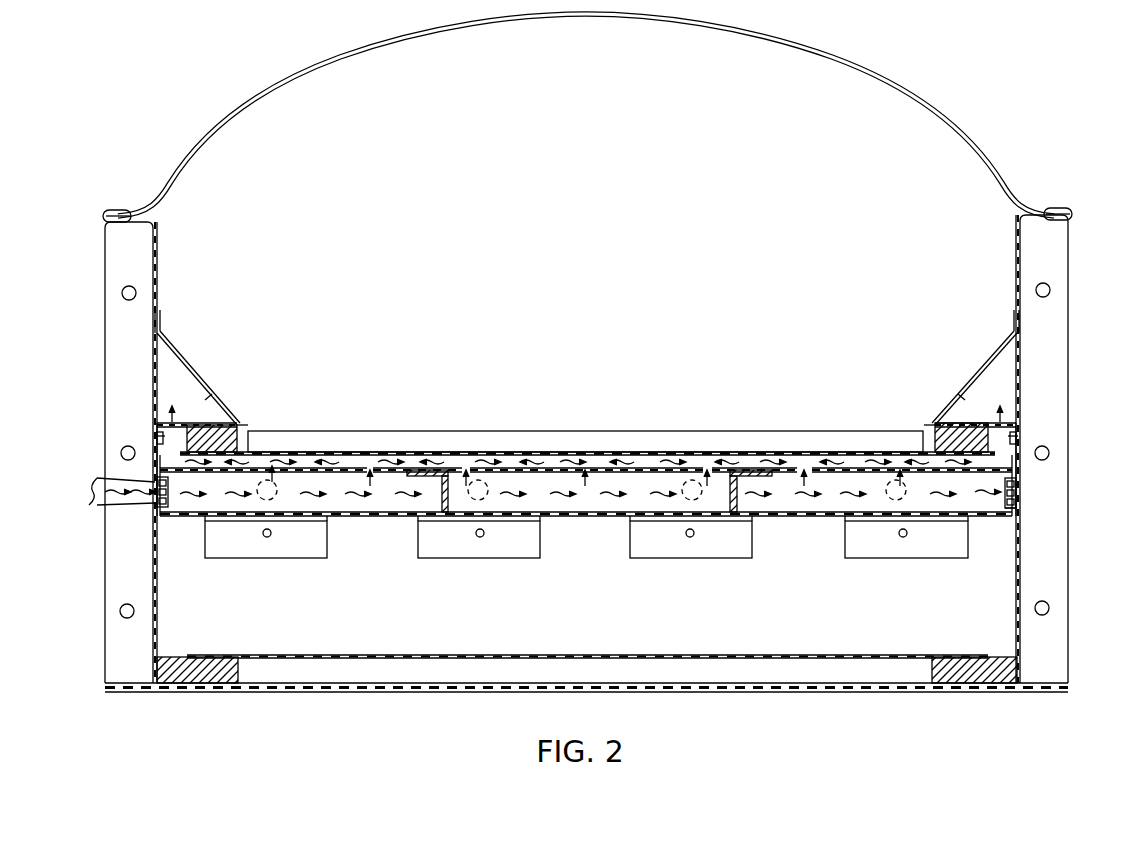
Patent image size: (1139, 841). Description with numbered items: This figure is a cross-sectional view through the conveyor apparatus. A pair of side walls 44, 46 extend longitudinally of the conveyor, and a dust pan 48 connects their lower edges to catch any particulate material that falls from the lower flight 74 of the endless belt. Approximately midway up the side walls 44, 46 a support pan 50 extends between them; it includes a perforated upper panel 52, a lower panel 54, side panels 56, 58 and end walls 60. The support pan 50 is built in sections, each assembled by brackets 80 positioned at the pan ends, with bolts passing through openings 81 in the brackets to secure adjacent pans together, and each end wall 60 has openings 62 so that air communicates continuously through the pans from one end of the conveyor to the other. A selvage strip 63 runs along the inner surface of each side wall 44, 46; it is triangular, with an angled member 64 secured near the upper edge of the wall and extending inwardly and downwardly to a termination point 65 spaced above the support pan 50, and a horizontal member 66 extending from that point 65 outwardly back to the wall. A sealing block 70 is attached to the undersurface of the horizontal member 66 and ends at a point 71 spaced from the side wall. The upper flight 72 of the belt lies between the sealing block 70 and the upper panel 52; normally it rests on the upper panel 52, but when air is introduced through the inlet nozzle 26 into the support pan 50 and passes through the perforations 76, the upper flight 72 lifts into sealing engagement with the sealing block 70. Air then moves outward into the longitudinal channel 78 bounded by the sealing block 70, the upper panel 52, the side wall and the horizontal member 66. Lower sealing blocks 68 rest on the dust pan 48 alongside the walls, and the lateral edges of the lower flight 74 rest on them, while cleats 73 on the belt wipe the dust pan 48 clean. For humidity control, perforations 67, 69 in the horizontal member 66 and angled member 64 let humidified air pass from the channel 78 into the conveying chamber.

The inlet nozzle 26 is at (97, 507).
The side wall 44 is at (1018, 243).
The side wall 46 is at (158, 245).
The dust pan 48 is at (300, 683).
The support pan 50 is at (790, 478).
The perforated upper panel 52 is at (680, 468).
The lower panel 54 is at (778, 512).
The side panel 56 is at (168, 512).
The side panel 58 is at (1007, 508).
The end wall 60 is at (560, 512).
The openings 62 is at (340, 508).
The selvage strip 63 is at (180, 351).
The angled member 64 is at (205, 400).
The termination point 65 is at (236, 428).
The horizontal member 66 is at (198, 430).
The perforations 67 is at (161, 430).
The lower sealing block 68 is at (972, 665).
The perforations 69 is at (188, 360).
The sealing block 70 is at (220, 440).
The termination point of sealing block 71 is at (157, 442).
The upper flight 72 is at (618, 452).
The cleat 73 is at (530, 431).
The lower flight 74 is at (882, 655).
The perforations 76 is at (462, 468).
The longitudinal channel 78 is at (168, 440).
The bracket 80 is at (860, 552).
The openings 81 is at (903, 538).